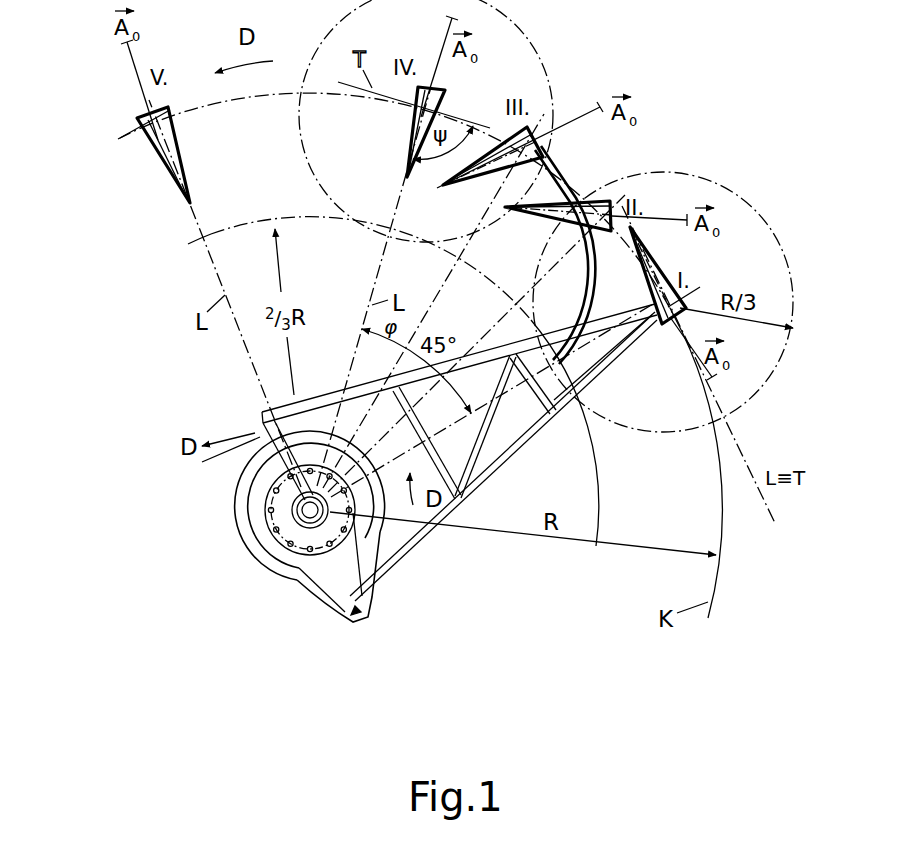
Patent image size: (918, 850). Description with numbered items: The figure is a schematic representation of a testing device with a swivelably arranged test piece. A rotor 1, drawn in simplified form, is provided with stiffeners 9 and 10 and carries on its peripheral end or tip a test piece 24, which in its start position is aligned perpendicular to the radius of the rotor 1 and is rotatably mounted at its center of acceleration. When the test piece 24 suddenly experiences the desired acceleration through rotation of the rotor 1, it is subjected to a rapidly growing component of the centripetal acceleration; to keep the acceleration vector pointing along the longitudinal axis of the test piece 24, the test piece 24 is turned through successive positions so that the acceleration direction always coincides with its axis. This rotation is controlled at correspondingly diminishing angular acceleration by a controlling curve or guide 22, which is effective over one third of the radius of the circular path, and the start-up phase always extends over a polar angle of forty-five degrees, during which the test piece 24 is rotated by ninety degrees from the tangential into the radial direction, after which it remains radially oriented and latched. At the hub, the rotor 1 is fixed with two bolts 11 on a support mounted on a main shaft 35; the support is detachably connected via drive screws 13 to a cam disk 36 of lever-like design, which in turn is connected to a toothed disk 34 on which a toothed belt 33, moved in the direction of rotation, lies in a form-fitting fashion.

The rotor 1 is at (309, 402).
The stiffener 9 is at (585, 398).
The stiffener 10 is at (479, 443).
The bolt 11 is at (257, 417).
The drive screw 13 is at (300, 522).
The controlling curve 22 is at (562, 173).
The test piece 24 is at (163, 152).
The toothed belt 33 is at (240, 453).
The toothed disk 34 is at (277, 577).
The main shaft 35 is at (303, 517).
The cam disk 36 is at (347, 583).